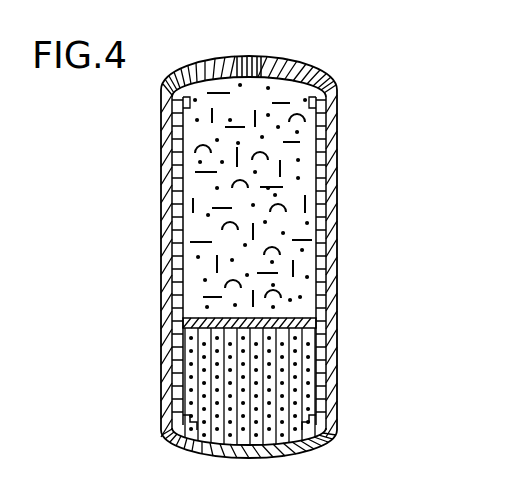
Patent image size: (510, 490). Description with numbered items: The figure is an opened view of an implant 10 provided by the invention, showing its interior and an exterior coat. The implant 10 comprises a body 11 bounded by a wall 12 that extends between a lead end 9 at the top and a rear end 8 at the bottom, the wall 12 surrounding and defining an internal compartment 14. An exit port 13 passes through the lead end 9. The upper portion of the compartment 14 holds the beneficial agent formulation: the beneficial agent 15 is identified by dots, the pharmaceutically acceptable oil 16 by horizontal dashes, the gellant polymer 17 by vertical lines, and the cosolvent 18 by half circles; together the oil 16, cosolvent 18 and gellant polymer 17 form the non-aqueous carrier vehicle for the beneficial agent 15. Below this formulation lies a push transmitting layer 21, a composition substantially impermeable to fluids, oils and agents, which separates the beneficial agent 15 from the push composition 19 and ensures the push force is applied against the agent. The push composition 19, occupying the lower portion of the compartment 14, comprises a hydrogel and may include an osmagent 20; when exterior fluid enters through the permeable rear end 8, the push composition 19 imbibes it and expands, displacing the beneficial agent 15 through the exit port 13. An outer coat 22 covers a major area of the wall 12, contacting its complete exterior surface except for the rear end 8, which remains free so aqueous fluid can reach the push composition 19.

The rear end 8 is at (307, 438).
The lead end 9 is at (293, 63).
The implant 10 is at (373, 82).
The body 11 is at (332, 123).
The wall 12 is at (332, 162).
The exit port 13 is at (250, 57).
The compartment 14 is at (306, 190).
The beneficial agent 15 is at (196, 121).
The oil 16 is at (215, 177).
The gellant polymer 17 is at (185, 211).
The cosolvent 18 is at (230, 228).
The push composition 19 is at (307, 343).
The osmagent 20 is at (312, 380).
The push transmitting layer 21 is at (312, 306).
The outer coat 22 is at (163, 353).